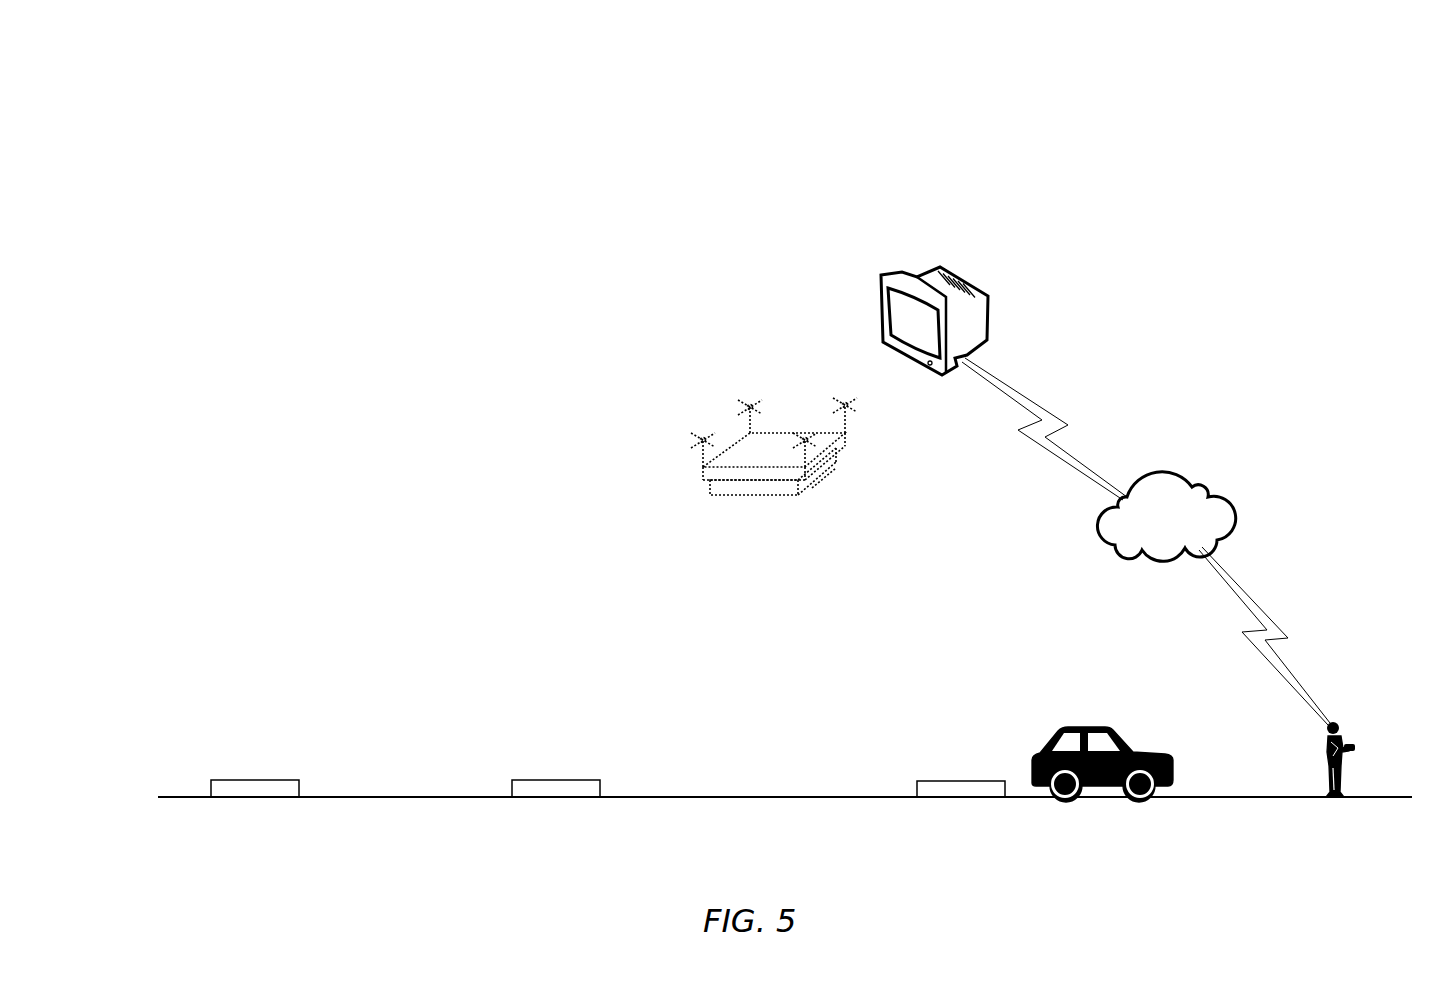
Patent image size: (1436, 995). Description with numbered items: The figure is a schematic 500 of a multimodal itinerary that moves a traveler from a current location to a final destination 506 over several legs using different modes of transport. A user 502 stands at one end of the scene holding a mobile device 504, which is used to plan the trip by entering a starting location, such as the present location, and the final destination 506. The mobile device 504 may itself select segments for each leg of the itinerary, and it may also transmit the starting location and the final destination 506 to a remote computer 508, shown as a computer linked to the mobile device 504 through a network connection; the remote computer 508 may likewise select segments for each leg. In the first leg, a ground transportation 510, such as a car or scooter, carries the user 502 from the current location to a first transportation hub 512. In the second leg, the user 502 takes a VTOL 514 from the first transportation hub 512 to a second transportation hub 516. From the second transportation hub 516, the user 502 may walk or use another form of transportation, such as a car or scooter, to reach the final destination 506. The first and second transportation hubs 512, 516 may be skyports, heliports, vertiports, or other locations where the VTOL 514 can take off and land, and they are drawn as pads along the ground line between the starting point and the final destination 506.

The environment 500 is at (1213, 83).
The user 502 is at (1315, 757).
The mobile device 504 is at (1355, 742).
The final destination 506 is at (265, 780).
The remote computer 508 is at (893, 270).
The ground transportation 510 is at (1102, 727).
The first transportation hub 512 is at (970, 780).
The VTOL 514 is at (738, 490).
The second transportation hub 516 is at (547, 780).